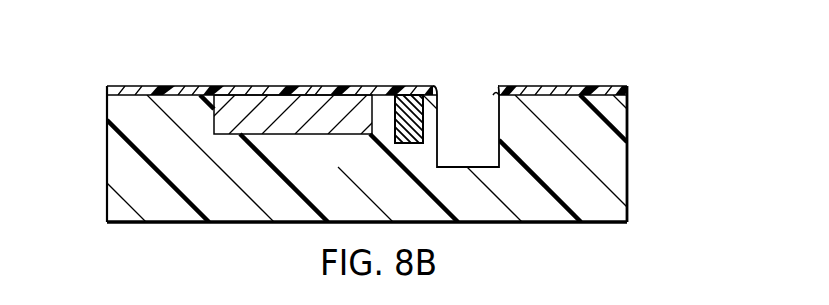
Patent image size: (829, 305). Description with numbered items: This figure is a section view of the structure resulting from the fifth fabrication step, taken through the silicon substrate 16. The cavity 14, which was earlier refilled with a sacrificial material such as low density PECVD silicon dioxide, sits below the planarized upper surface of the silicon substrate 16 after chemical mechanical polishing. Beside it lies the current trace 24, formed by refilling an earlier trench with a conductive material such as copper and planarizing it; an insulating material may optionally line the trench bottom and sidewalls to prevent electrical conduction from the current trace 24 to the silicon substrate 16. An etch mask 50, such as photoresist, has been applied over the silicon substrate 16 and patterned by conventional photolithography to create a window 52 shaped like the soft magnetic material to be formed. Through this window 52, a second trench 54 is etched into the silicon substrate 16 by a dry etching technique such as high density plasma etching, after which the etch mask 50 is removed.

The cavity 14 is at (346, 134).
The silicon substrate 16 is at (608, 208).
The current trace 24 is at (397, 128).
The etch mask 50 is at (566, 86).
The window 52 is at (496, 92).
The second trench 54 is at (440, 100).